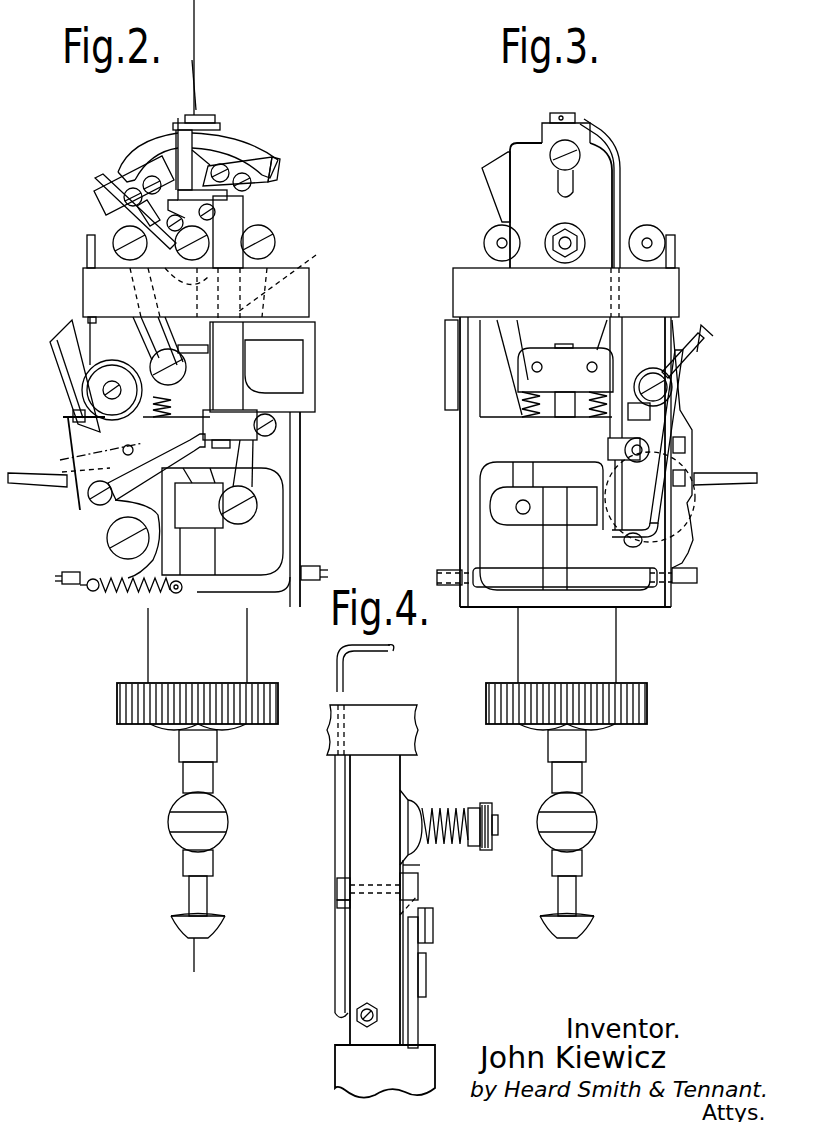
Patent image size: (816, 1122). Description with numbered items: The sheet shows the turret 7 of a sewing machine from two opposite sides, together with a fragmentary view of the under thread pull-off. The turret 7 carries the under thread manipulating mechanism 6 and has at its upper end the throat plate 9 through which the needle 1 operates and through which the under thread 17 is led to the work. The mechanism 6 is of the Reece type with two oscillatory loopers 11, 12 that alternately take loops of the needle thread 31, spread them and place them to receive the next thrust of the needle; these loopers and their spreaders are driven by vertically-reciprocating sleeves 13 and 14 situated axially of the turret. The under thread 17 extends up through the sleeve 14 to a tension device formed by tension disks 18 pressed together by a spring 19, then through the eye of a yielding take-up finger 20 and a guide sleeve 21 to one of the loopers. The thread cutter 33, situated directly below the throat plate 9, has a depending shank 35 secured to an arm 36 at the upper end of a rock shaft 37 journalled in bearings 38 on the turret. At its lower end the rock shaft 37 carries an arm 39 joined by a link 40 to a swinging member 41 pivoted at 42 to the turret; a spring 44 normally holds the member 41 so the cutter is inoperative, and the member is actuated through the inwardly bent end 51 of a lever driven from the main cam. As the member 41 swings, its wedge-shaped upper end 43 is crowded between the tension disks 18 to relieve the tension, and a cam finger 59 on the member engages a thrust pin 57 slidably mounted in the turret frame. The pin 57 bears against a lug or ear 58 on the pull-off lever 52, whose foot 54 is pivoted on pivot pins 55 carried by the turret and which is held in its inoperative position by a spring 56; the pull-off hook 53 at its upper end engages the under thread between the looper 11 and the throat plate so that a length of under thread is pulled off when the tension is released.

In FIG. 2, the needle 1 is at (197, 40).
In FIG. 2, the needle thread 31 is at (197, 75).
In FIG. 2, the throat plate 9 is at (210, 120).
In FIG. 3, the throat plate 9 is at (566, 116).
In FIG. 2, the pull-off hook 53 is at (178, 116).
In FIG. 4, the pull-off hook 53 is at (396, 650).
In FIG. 2, the thread cutter 33 is at (172, 130).
In FIG. 2, the looper 12 is at (196, 145).
In FIG. 2, the looper 11 is at (152, 158).
In FIG. 2, the shank 35 is at (205, 165).
In FIG. 2, the under thread manipulating mechanism 6 is at (268, 172).
In FIG. 2, the arm 36 is at (243, 215).
In FIG. 2, the guide sleeve 21 is at (87, 245).
In FIG. 3, the guide sleeve 21 is at (676, 252).
In FIG. 2, the rock shaft 37 is at (294, 276).
In FIG. 2, the turret 7 is at (298, 300).
In FIG. 3, the turret 7 is at (455, 290).
In FIG. 4, the turret 7 is at (402, 746).
In FIG. 2, the under thread 17 is at (78, 330).
In FIG. 2, the take-up finger 20 is at (54, 343).
In FIG. 3, the take-up finger 20 is at (714, 331).
In FIG. 2, the bearings 38 is at (250, 350).
In FIG. 2, the tension disks 18 is at (84, 383).
In FIG. 3, the tension disks 18 is at (684, 345).
In FIG. 4, the tension disks 18 is at (414, 800).
In FIG. 2, the wedge-shaped upper end 43 is at (72, 422).
In FIG. 4, the wedge-shaped upper end 43 is at (422, 865).
In FIG. 2, the cam finger 59 is at (158, 430).
In FIG. 3, the cam finger 59 is at (633, 395).
In FIG. 4, the cam finger 59 is at (420, 890).
In FIG. 2, the inwardly bent end 51 is at (22, 476).
In FIG. 3, the inwardly bent end 51 is at (726, 472).
In FIG. 2, the arm 39 is at (272, 444).
In FIG. 2, the thrust pin 57 is at (128, 472).
In FIG. 3, the thrust pin 57 is at (610, 446).
In FIG. 4, the thrust pin 57 is at (340, 905).
In FIG. 2, the link 40 is at (183, 452).
In FIG. 4, the link 40 is at (434, 921).
In FIG. 2, the swinging member 41 is at (80, 516).
In FIG. 3, the swinging member 41 is at (692, 530).
In FIG. 4, the swinging member 41 is at (416, 1015).
In FIG. 2, the pivot 42 is at (110, 538).
In FIG. 3, the pivot 42 is at (632, 548).
In FIG. 4, the pivot 42 is at (428, 975).
In FIG. 2, the vertically-reciprocating sleeve 13 is at (205, 557).
In FIG. 3, the vertically-reciprocating sleeve 13 is at (586, 752).
In FIG. 2, the vertically-reciprocating sleeve 14 is at (196, 887).
In FIG. 3, the vertically-reciprocating sleeve 14 is at (576, 896).
In FIG. 2, the pivot pins 55 is at (314, 566).
In FIG. 3, the pivot pins 55 is at (487, 575).
In FIG. 4, the pivot pins 55 is at (358, 1018).
In FIG. 2, the spring 44 is at (140, 598).
In FIG. 3, the pull-off lever 52 is at (620, 200).
In FIG. 4, the pull-off lever 52 is at (346, 698).
In FIG. 3, the lug or ear 58 is at (646, 452).
In FIG. 4, the lug or ear 58 is at (334, 882).
In FIG. 3, the spring 56 is at (662, 503).
In FIG. 3, the foot 54 is at (550, 592).
In FIG. 4, the spring 19 is at (447, 812).